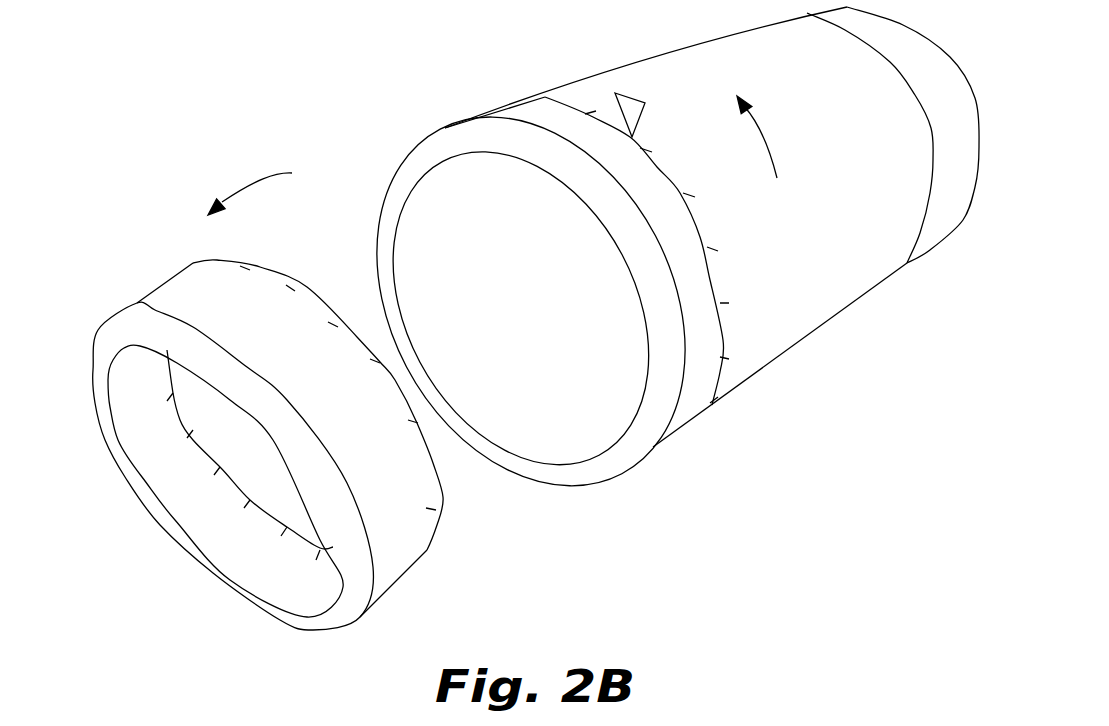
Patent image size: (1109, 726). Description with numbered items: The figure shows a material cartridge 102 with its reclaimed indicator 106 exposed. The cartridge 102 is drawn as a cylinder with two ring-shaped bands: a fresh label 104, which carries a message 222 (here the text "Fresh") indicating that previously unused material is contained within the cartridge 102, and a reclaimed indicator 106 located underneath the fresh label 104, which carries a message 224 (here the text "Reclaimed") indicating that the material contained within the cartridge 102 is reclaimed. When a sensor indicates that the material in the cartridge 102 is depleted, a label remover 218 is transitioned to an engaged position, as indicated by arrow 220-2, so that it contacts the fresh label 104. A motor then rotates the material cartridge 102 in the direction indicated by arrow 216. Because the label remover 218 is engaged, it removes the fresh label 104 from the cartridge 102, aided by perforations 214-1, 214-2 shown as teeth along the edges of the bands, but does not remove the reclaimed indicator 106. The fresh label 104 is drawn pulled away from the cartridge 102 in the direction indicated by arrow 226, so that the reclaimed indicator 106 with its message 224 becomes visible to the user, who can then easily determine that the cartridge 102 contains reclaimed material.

The material cartridge 102 is at (470, 82).
The fresh label 104 is at (243, 292).
The reclaimed indicator 106 is at (420, 174).
The perforations 214-1 is at (722, 353).
The perforations 214-2 is at (430, 467).
The arrow 216 is at (786, 137).
The label remover 218 is at (619, 108).
The arrow 220-2 is at (657, 144).
The message 222 is at (183, 337).
The message 224 is at (452, 128).
The arrow 226 is at (270, 191).